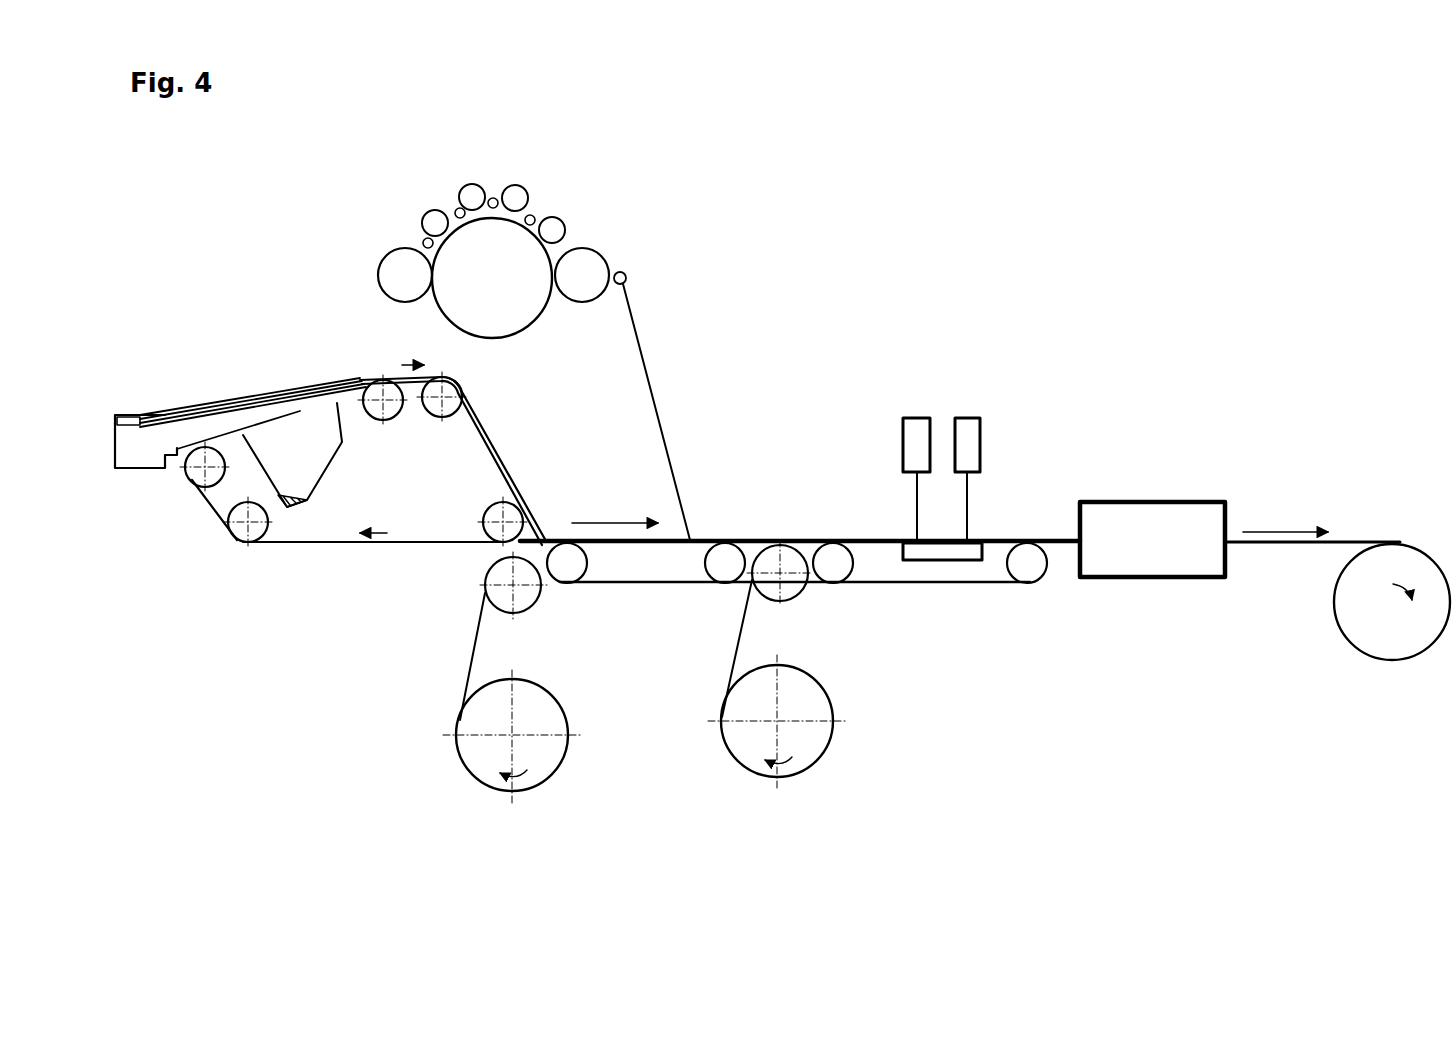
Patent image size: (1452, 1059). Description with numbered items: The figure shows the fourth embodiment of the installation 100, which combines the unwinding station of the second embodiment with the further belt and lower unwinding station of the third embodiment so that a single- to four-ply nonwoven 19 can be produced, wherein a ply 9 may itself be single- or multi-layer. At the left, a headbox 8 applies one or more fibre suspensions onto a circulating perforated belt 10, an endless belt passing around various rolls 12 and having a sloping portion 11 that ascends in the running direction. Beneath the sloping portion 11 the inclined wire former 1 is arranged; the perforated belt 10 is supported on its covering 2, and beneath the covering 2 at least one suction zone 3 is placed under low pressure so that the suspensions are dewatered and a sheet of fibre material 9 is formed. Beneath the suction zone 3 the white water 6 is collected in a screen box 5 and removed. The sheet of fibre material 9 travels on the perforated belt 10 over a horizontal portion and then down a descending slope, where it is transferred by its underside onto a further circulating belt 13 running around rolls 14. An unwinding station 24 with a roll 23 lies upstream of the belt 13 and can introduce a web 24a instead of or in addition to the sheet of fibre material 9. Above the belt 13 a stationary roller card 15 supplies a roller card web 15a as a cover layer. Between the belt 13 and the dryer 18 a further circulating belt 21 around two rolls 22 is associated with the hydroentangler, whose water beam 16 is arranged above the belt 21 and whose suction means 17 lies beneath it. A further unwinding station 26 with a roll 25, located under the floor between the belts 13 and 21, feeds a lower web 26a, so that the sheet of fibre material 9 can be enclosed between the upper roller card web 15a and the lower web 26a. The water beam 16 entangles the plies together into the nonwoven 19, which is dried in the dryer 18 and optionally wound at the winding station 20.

The inclined wire former 1 is at (275, 288).
The covering 2 is at (272, 407).
The suction zone 3 is at (280, 463).
The screen box 5 is at (262, 478).
The white water 6 is at (307, 500).
The headbox 8 is at (125, 413).
The sheet of fibre material 9 is at (345, 380).
The perforated belt 10 is at (207, 500).
The sloping portion 11 is at (266, 376).
The rolls 12 is at (490, 517).
The belt 13 is at (683, 582).
The rolls 14 is at (565, 565).
The roller card 15 is at (410, 184).
The roller card web 15a is at (645, 325).
The water beam 16 is at (972, 417).
The suction means 17 is at (940, 560).
The dryer 18 is at (1108, 520).
The nonwoven 19 is at (1283, 547).
The winding station 20 is at (1385, 563).
The belt 21 is at (965, 582).
The rolls 22 is at (1032, 568).
The roll 23 is at (523, 600).
The unwinding station 24 is at (497, 742).
The web 24a is at (485, 588).
The roll 25 is at (792, 578).
The unwinding station 26 is at (760, 728).
The web 26a is at (750, 580).
The installation 100 is at (1248, 177).